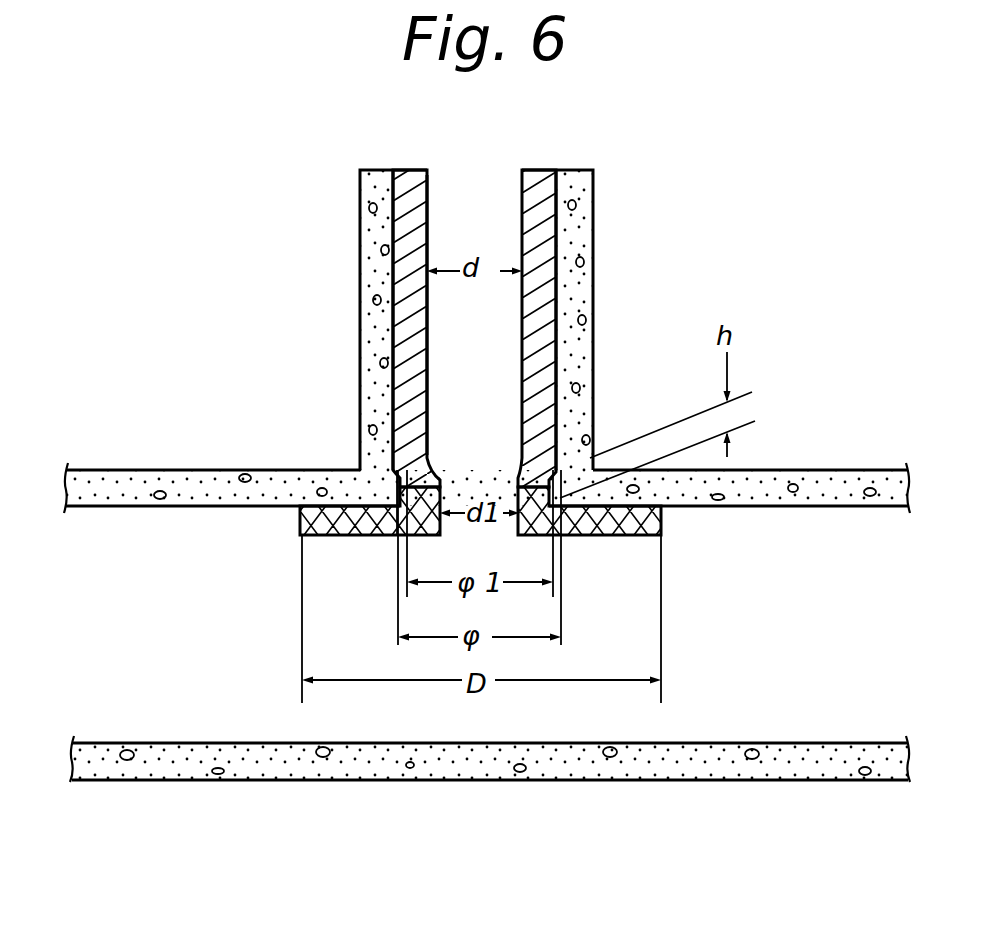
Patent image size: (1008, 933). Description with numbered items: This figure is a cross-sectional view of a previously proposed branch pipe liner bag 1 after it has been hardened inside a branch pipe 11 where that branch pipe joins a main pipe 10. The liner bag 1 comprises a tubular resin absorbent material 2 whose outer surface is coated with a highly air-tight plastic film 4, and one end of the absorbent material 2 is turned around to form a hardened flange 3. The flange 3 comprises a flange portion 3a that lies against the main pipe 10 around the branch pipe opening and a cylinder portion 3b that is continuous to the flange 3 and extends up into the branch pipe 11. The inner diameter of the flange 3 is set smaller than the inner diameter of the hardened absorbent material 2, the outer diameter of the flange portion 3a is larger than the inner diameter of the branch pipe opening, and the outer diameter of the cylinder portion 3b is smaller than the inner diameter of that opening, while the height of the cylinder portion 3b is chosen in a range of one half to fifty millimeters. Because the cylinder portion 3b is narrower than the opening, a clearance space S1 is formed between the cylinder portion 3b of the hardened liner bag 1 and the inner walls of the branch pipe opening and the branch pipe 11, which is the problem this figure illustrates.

The branch pipe liner bag 1 is at (432, 222).
The tubular resin absorbent material 2 is at (400, 387).
The flange 3 is at (349, 541).
The flange portion 3a is at (605, 538).
The cylinder portion 3b is at (425, 480).
The plastic film 4 is at (428, 357).
The main pipe 10 is at (748, 780).
The branch pipe 11 is at (596, 312).
The clearance space S1 is at (392, 538).